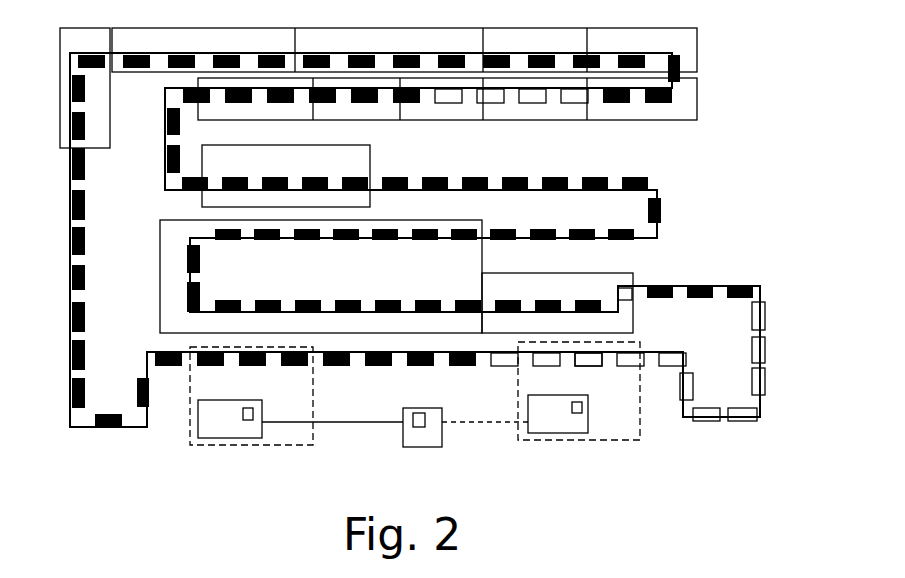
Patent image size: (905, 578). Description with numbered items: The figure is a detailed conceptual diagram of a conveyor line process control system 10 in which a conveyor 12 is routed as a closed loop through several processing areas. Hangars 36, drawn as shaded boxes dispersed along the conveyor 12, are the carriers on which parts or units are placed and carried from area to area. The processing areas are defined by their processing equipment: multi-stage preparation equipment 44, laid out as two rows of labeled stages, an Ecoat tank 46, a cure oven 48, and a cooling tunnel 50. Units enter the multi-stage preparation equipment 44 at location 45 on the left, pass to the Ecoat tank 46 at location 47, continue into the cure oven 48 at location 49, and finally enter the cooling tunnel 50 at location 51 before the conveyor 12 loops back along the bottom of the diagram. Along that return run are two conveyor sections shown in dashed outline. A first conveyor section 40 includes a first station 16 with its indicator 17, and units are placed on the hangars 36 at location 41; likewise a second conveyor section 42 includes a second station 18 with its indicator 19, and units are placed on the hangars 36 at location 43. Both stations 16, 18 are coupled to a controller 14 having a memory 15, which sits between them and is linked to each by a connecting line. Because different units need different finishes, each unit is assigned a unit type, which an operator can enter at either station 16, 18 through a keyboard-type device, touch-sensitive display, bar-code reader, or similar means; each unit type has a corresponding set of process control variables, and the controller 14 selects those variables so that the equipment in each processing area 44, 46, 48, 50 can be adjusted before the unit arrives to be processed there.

The conveyor line process control system 10 is at (802, 140).
The conveyor 12 is at (770, 283).
The controller 14 is at (419, 445).
The memory 15 is at (417, 413).
The first station 16 is at (532, 436).
The indicator 17 is at (577, 413).
The second station 18 is at (199, 440).
The indicator 19 is at (243, 419).
The hangars 36 is at (70, 290).
The first conveyor section 40 is at (613, 449).
The location 41 is at (595, 356).
The second conveyor section 42 is at (282, 447).
The location 43 is at (270, 358).
The multi-stage preparation equipment 44 is at (700, 48).
The location 45 is at (62, 150).
The Ecoat tank 46 is at (373, 158).
The location 47 is at (200, 197).
The cure oven 48 is at (158, 276).
The location 49 is at (487, 237).
The cooling tunnel 50 is at (639, 312).
The location 51 is at (494, 298).